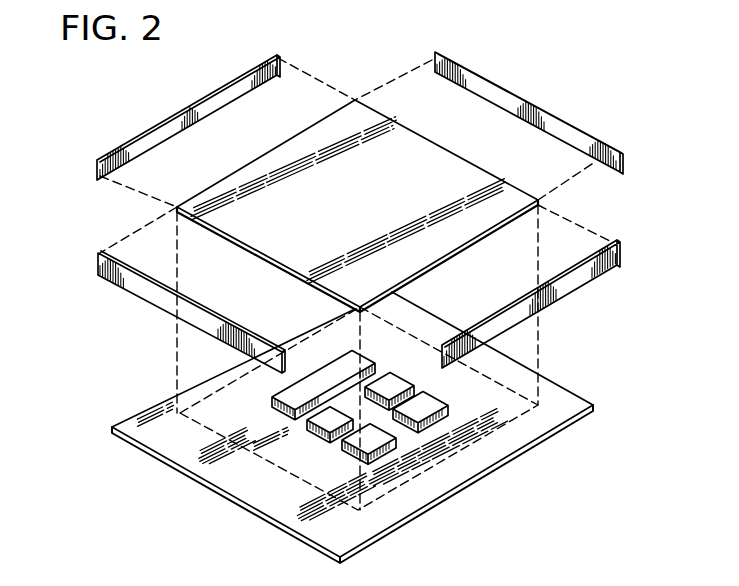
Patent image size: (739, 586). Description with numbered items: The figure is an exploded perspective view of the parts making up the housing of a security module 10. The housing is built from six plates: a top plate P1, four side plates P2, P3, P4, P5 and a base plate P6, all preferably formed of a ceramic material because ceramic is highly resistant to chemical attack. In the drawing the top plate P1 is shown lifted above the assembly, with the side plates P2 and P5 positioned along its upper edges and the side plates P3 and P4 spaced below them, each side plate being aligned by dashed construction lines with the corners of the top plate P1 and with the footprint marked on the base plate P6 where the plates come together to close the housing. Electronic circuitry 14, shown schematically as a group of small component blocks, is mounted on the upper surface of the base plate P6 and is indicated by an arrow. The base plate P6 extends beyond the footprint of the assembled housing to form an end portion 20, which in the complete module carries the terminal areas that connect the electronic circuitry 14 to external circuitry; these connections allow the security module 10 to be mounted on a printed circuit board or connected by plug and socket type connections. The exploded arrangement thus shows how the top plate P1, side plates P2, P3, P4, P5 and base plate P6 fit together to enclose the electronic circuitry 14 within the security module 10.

The security module 10 is at (147, 345).
The electronic circuitry 14 is at (406, 357).
The end portion 20 is at (352, 427).
The top plate P1 is at (358, 224).
The side plate P2 is at (510, 92).
The side plate P3 is at (603, 273).
The side plate P4 is at (123, 281).
The side plate P5 is at (183, 108).
The base plate P6 is at (525, 380).